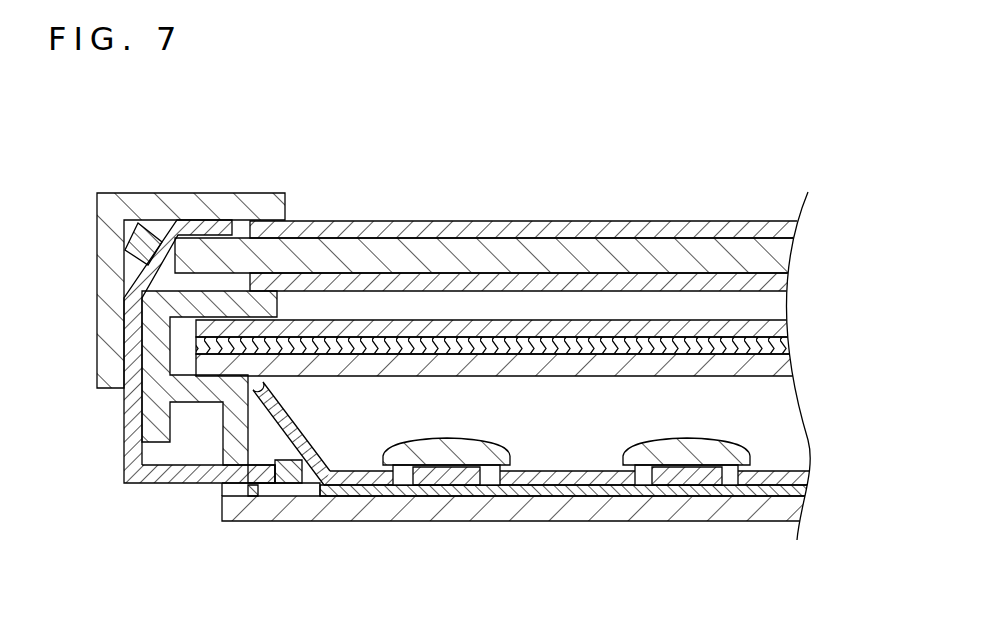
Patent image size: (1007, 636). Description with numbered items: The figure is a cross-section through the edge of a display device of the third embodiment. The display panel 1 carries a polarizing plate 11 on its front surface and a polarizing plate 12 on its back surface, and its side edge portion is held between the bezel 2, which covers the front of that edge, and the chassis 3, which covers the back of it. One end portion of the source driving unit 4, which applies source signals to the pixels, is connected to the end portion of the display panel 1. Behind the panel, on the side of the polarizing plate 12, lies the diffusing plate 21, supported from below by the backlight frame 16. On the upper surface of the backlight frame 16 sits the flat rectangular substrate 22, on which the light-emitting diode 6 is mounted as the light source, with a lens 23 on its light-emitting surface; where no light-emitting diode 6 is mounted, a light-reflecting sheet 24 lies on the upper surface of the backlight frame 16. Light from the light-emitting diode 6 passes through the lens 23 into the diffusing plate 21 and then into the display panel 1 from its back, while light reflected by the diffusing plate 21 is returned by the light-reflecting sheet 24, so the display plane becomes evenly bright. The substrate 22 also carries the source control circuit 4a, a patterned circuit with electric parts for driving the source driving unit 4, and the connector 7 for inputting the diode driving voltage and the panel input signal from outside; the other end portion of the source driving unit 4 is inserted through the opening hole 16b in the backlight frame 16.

The display panel 1 is at (411, 256).
The polarizing plate 11 is at (446, 229).
The polarizing plate 12 is at (362, 270).
The bezel 2 is at (160, 199).
The chassis 3 is at (138, 415).
The source driving unit 4 is at (145, 258).
The source control circuit 4a is at (265, 470).
The connector 7 is at (288, 483).
The backlight frame 16 is at (659, 508).
The opening hole 16b is at (225, 485).
The diffusing plate 21 is at (348, 377).
The substrate 22 is at (584, 494).
The lens 23 is at (427, 440).
The light-reflecting sheet 24 is at (555, 471).
The light-emitting diode 6 is at (460, 473).